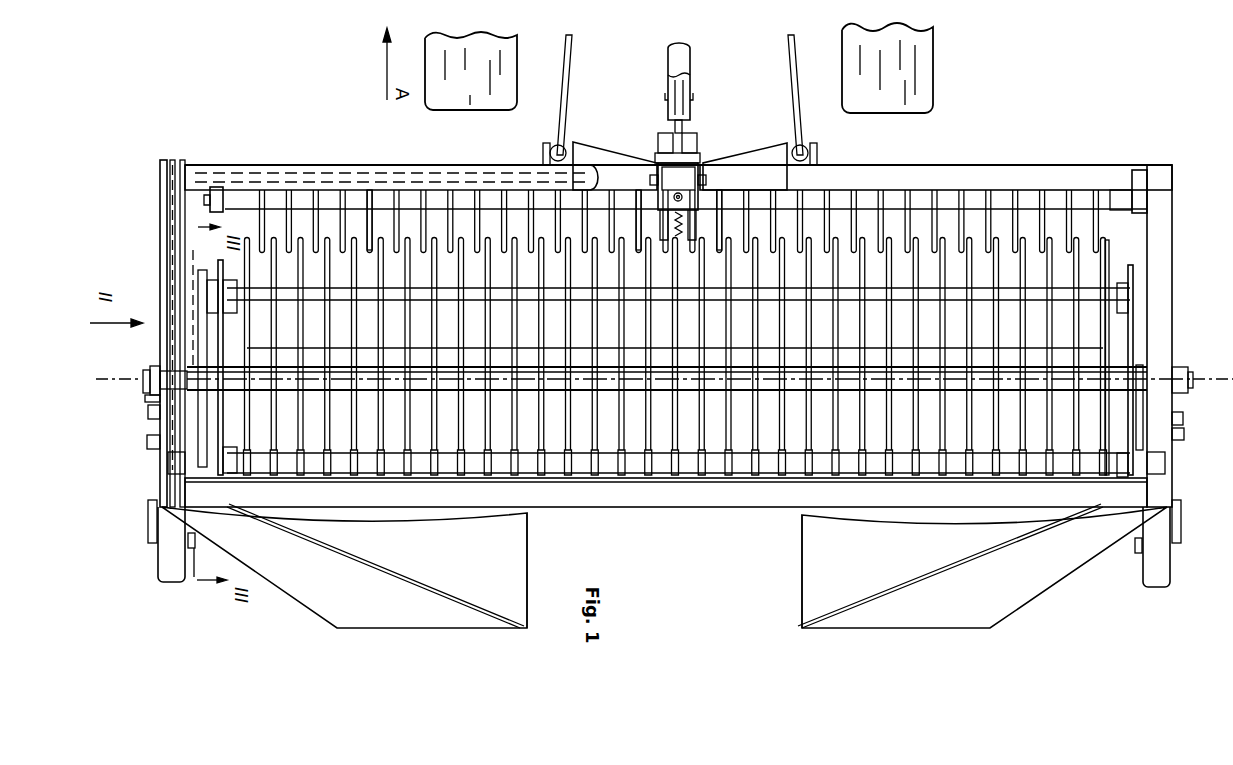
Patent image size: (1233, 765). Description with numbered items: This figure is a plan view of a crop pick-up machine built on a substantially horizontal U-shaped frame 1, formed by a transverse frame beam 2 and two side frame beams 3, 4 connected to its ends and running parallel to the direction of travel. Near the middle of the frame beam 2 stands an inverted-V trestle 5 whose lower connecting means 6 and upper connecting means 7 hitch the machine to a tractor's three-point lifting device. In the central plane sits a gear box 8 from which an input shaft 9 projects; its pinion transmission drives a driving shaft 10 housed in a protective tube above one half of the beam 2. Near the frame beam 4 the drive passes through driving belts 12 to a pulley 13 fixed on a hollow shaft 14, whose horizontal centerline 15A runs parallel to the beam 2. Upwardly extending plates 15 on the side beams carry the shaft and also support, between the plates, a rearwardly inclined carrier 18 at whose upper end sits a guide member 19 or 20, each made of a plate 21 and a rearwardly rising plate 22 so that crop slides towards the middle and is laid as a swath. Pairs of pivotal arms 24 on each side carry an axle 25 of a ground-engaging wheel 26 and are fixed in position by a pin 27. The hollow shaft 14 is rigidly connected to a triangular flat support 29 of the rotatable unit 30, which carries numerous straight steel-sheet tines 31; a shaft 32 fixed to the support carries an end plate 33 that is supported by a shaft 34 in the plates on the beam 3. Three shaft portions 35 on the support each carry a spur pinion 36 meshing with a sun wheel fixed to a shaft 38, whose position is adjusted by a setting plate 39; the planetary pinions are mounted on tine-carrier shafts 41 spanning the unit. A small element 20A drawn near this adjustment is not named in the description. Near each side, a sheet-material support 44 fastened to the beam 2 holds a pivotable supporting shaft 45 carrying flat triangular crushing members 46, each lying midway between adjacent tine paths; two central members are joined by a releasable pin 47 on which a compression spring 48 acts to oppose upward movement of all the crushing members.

The frame 1 is at (1047, 165).
The frame beam 2 is at (982, 170).
The frame beam 3 is at (1172, 222).
The frame beam 4 is at (160, 205).
The trestle 5 is at (774, 145).
The connecting means 6 is at (553, 148).
The connecting means 7 is at (706, 178).
The gear box 8 is at (698, 150).
The input shaft 9 is at (661, 137).
The driving shaft 10 is at (650, 180).
The driving belts 12 is at (170, 235).
The pulley 13 is at (221, 320).
The hollow shaft 14 is at (205, 385).
The plate 15 is at (185, 405).
The centerline 15A is at (1198, 377).
The carrier 18 is at (168, 462).
The guide member 19 is at (798, 607).
The guide member 20 is at (266, 586).
The lock nut 20A is at (146, 398).
The plate 21 is at (515, 560).
The plate 22 is at (400, 598).
The pivotal arms 24 is at (150, 505).
The axle 25 is at (150, 535).
The ground-engaging wheel 26 is at (176, 578).
The pin 27 is at (148, 443).
The flat support 29 is at (210, 316).
The rotatable unit 30 is at (679, 426).
The tines 31 is at (300, 300).
The shaft 32 is at (738, 372).
The end plate 33 is at (1134, 285).
The shaft 34 is at (1140, 370).
The shaft portions 35 is at (1141, 400).
The spur pinion 36 is at (148, 411).
The shaft 38 is at (146, 375).
The setting plate 39 is at (152, 370).
The shaft 41 is at (607, 458).
The support 44 is at (158, 162).
The supporting shaft 45 is at (1118, 195).
The crushing members 46 is at (583, 240).
The releasable pin 47 is at (720, 240).
The compression spring 48 is at (640, 240).